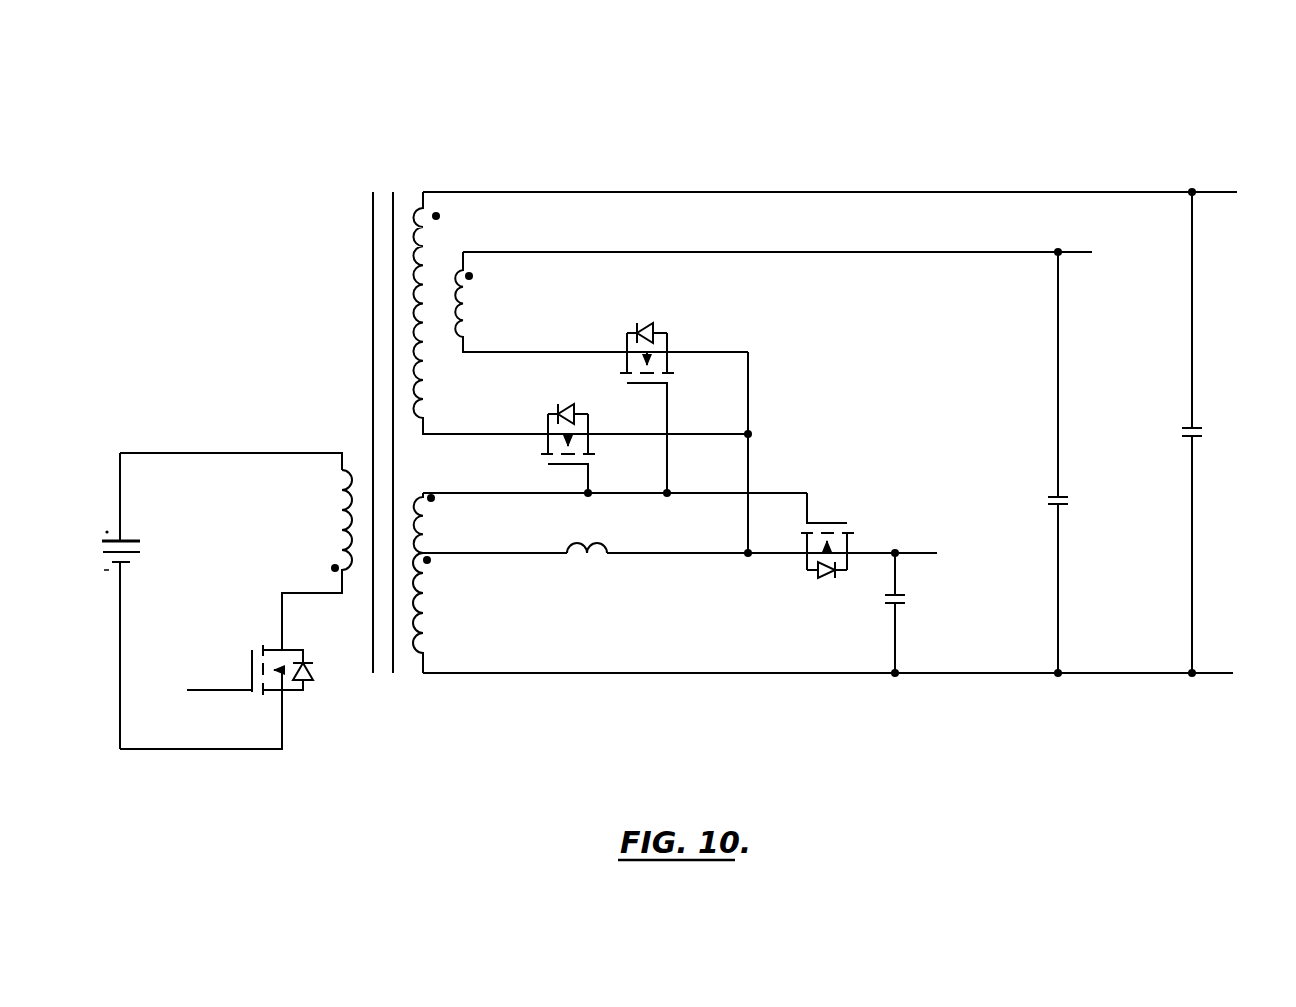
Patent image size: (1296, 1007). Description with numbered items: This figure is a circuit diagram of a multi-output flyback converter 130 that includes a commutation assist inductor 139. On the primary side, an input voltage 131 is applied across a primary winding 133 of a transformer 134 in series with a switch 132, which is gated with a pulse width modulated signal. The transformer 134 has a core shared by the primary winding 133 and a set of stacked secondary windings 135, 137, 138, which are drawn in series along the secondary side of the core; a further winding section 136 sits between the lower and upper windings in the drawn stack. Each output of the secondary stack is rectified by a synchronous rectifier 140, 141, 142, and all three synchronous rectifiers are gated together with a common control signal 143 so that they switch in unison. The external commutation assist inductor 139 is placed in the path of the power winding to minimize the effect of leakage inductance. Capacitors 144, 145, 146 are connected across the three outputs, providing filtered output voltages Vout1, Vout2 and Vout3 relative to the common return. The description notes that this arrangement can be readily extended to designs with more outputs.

The multi-output flyback converter 130 is at (837, 120).
The input voltage 131 is at (105, 503).
The switch 132 is at (308, 708).
The primary winding 133 is at (317, 510).
The transformer 134 is at (328, 240).
The secondary winding 135 is at (438, 613).
The second secondary winding 136 is at (442, 532).
The secondary winding 137 is at (438, 360).
The secondary winding 138 is at (488, 297).
The commutation assist inductor 139 is at (582, 557).
The synchronous rectifier 140 is at (692, 333).
The synchronous rectifier 141 is at (525, 447).
The synchronous rectifier 142 is at (845, 498).
The common control signal 143 is at (748, 555).
The capacitor 144 is at (888, 603).
The capacitor 145 is at (1048, 497).
The capacitor 146 is at (1182, 428).